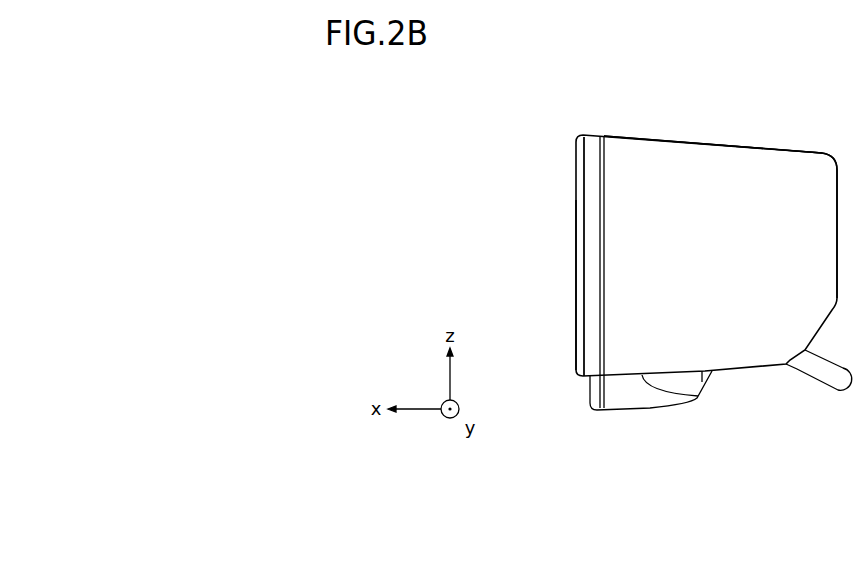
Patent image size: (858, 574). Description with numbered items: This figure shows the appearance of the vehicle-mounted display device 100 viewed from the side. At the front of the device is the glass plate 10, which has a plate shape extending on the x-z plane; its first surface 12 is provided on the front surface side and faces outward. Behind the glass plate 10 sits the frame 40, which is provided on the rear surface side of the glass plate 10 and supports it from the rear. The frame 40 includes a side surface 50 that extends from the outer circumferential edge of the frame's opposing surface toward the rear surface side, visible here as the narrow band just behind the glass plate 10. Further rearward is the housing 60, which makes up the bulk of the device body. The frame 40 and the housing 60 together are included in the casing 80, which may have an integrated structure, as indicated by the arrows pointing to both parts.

The glass plate 10 is at (578, 157).
The first surface 12 is at (577, 272).
The frame 40 is at (585, 135).
The side surface 50 is at (593, 197).
The housing 60 is at (750, 162).
The casing 80 is at (782, 92).
The vehicle-mounted display device 100 is at (750, 430).